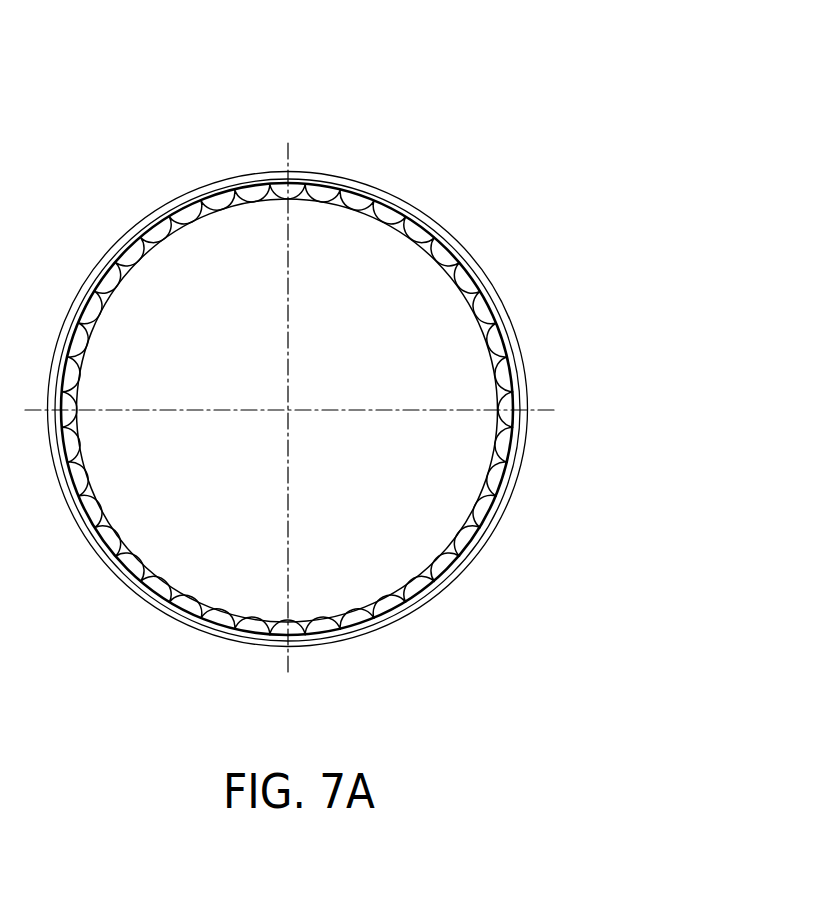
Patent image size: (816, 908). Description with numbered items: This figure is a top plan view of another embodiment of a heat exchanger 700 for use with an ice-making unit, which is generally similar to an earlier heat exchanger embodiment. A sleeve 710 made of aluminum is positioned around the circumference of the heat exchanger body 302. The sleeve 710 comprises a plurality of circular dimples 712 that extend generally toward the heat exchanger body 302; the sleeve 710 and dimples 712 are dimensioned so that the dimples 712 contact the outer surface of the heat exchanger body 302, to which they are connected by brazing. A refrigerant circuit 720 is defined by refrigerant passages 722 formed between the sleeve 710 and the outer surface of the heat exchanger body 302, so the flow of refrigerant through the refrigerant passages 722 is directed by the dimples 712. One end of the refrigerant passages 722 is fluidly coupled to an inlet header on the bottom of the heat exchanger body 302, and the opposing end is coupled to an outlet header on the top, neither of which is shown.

The heat exchanger 700 is at (426, 90).
The sleeve 710 is at (157, 222).
The circular dimples 712 is at (250, 180).
The heat exchanger body 302 is at (408, 243).
The refrigerant circuit 720 is at (476, 325).
The refrigerant passages 722 is at (505, 392).